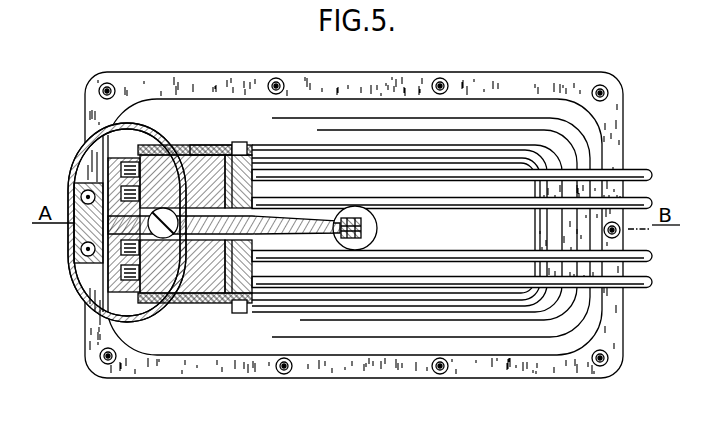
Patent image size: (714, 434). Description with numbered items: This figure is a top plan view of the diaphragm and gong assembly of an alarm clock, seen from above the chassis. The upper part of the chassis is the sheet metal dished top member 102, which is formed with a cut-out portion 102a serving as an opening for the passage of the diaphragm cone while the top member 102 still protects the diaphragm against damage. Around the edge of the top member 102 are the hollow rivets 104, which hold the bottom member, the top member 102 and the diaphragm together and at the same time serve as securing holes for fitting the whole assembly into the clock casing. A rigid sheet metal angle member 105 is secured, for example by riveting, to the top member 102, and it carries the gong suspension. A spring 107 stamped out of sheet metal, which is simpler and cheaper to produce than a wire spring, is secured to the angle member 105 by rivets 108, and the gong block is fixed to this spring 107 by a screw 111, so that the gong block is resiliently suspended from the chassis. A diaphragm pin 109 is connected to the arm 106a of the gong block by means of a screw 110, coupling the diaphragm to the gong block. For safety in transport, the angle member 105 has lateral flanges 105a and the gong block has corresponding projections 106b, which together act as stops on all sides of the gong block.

The top member 102 is at (521, 88).
The cut-out portion 102a is at (482, 224).
The rivets 104 is at (103, 84).
The angle member 105 is at (118, 263).
The lateral flanges 105a is at (197, 150).
The arm of the gong block 106a is at (307, 222).
The projections 106b is at (243, 312).
The spring 107 is at (85, 146).
The rivets 108 is at (81, 197).
The diaphragm pin 109 is at (380, 228).
The screw 110 is at (353, 237).
The screw 111 is at (168, 228).